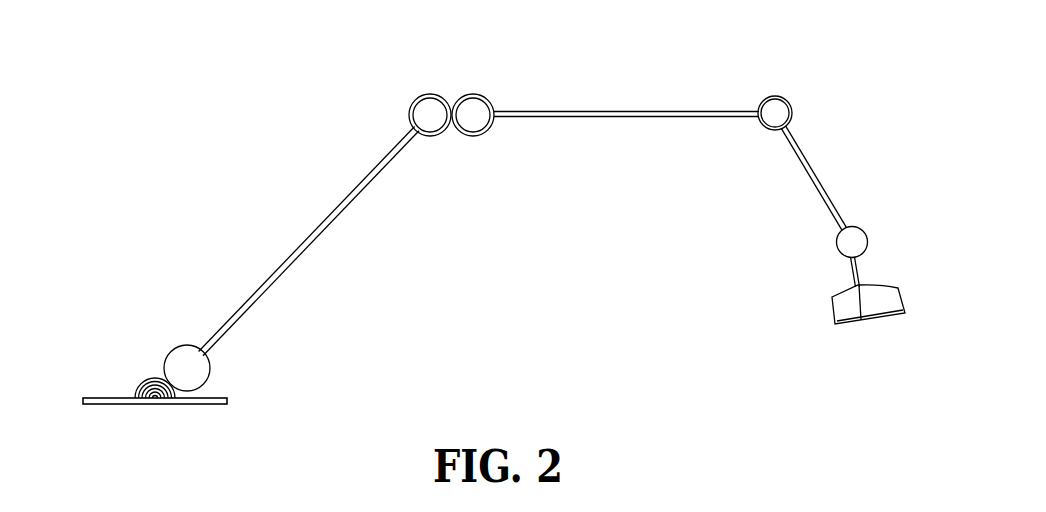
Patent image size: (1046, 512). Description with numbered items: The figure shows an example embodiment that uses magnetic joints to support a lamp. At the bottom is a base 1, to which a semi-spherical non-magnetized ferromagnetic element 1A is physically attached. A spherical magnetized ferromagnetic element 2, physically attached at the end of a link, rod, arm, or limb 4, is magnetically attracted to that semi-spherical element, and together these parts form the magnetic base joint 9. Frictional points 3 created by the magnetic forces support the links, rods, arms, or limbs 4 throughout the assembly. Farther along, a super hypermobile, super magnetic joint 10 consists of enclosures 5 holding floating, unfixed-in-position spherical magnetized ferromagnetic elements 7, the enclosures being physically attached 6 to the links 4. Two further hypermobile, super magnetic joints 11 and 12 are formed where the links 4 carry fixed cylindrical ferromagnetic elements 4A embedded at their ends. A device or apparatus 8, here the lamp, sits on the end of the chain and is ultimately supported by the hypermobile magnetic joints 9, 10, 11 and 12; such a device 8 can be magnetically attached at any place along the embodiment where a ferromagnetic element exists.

The base 1 is at (105, 409).
The non-magnetized ferromagnetic element 1A is at (130, 380).
The magnetized ferromagnetic element 2 is at (191, 364).
The frictional points 3 is at (158, 366).
The link, rod, arm, or limb 4 is at (295, 266).
The fixed ferromagnetic cylindrical element 4A is at (791, 133).
The enclosure 5 is at (409, 98).
The physical attachment 6 is at (411, 125).
The magnetized spherical ferromagnetic element 7 is at (442, 112).
The device/apparatus 8 is at (849, 303).
The magnetic base joint 9 is at (222, 386).
The hypermobile, hypermagnetic joint 10 is at (437, 158).
The hypermobile, super magnetic joint 11 is at (752, 133).
The hypermobile, super magnetic joint 12 is at (876, 221).